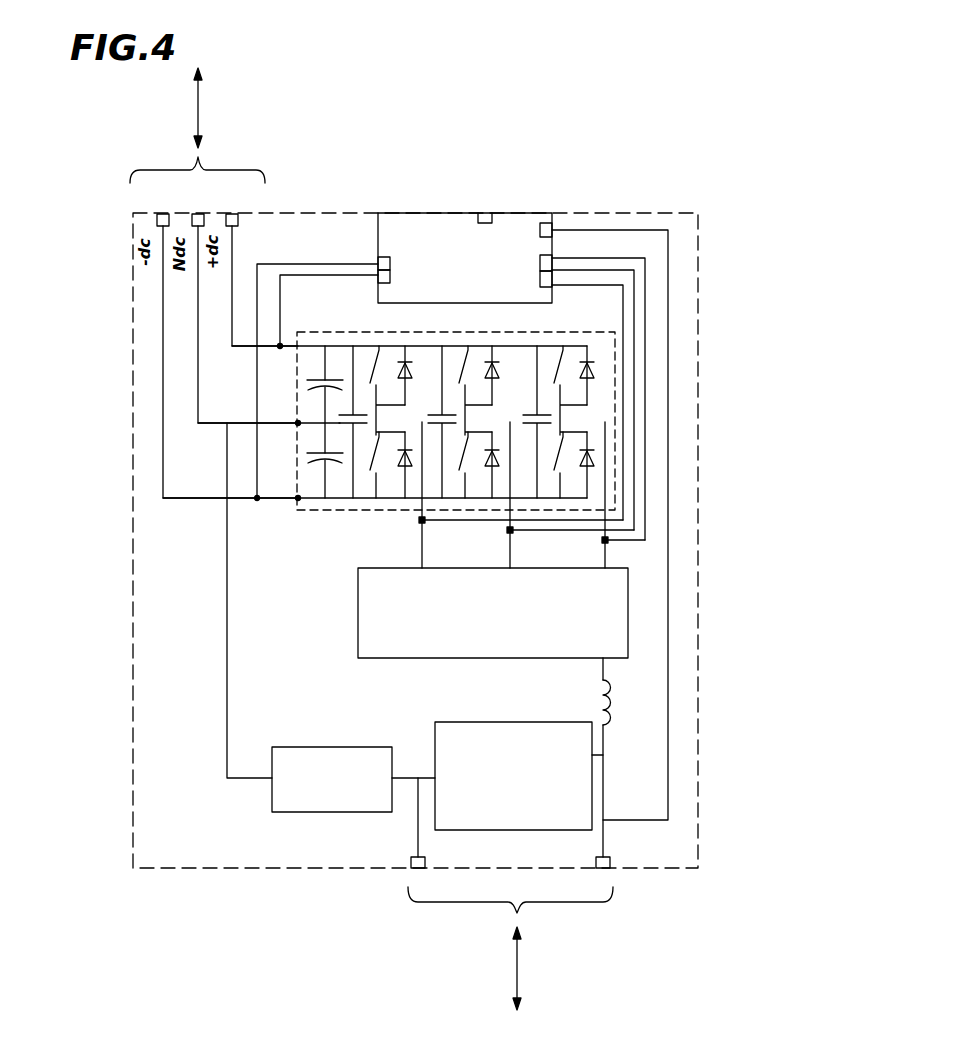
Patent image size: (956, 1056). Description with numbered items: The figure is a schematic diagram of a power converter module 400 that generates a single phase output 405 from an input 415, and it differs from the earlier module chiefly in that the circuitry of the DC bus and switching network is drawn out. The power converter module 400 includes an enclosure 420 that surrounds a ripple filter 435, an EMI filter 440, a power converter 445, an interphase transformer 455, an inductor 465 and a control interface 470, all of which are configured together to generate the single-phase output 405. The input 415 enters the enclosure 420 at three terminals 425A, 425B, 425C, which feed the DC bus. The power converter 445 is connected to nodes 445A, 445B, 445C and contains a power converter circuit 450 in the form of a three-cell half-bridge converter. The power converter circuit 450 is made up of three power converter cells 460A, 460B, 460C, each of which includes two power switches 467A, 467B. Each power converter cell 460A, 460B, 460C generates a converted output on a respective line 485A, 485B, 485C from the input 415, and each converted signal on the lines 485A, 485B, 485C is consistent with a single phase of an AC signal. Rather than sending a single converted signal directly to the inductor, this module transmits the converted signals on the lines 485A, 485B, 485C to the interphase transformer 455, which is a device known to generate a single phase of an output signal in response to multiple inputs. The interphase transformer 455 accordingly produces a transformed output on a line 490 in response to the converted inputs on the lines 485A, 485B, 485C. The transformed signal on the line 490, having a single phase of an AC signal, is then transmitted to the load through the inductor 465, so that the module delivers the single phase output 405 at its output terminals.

The power converter module 400 is at (590, 131).
The single phase output 405 is at (517, 967).
The input 415 is at (198, 109).
The enclosure 420 is at (133, 795).
The -dc input terminal 425A is at (158, 214).
The +dc input terminal 425B is at (237, 214).
The Ndc neutral input terminal 425C is at (199, 214).
The ripple filter 435 is at (593, 755).
The EMI filter 440 is at (297, 813).
The power converter 445 is at (617, 497).
The node 445A is at (297, 346).
The node 445B is at (297, 498).
The node 445C is at (297, 423).
The power converter circuit 450 is at (576, 330).
The interphase transformer 455 is at (628, 607).
The power converter cell 460A is at (388, 340).
The power converter cell 460B is at (483, 338).
The power converter cell 460C is at (651, 393).
The inductor 465 is at (615, 706).
The power switch 467A is at (603, 368).
The power switch 467B is at (603, 455).
The control interface 470 is at (519, 216).
The line 485A is at (419, 521).
The line 485B is at (508, 560).
The line 485C is at (607, 553).
The line 490 is at (604, 675).